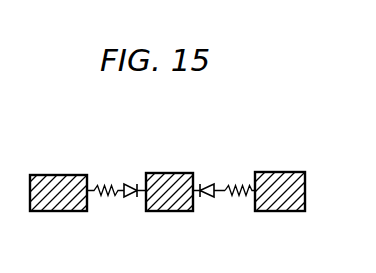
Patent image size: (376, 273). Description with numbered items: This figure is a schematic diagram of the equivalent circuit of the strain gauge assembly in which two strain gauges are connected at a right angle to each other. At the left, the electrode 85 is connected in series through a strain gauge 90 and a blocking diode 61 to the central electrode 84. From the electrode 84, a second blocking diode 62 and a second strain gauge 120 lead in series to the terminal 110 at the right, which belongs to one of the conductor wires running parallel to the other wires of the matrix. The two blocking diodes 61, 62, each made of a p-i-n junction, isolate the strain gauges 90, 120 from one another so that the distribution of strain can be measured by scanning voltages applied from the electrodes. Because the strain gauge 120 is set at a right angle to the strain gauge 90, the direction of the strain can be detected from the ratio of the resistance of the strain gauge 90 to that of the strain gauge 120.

The electrode 85 is at (55, 211).
The strain gauge 90 is at (106, 197).
The blocking diode 61 is at (132, 183).
The electrode 84 is at (163, 211).
The blocking diode 62 is at (207, 184).
The strain gauge 120 is at (235, 197).
The terminal 110 is at (277, 211).